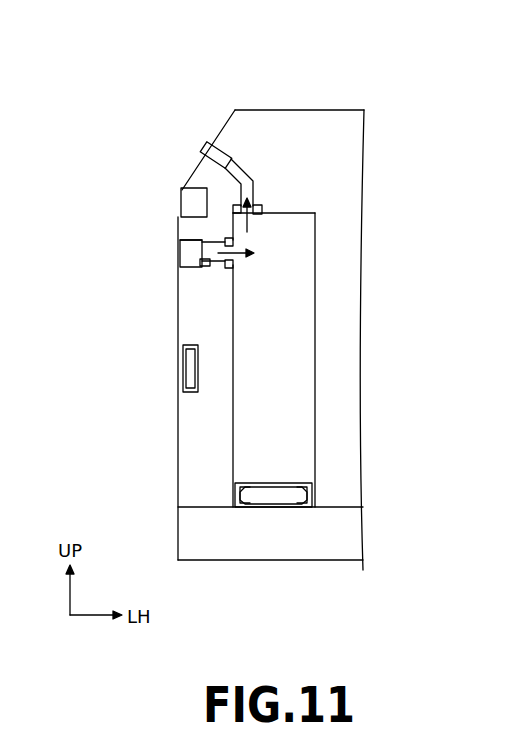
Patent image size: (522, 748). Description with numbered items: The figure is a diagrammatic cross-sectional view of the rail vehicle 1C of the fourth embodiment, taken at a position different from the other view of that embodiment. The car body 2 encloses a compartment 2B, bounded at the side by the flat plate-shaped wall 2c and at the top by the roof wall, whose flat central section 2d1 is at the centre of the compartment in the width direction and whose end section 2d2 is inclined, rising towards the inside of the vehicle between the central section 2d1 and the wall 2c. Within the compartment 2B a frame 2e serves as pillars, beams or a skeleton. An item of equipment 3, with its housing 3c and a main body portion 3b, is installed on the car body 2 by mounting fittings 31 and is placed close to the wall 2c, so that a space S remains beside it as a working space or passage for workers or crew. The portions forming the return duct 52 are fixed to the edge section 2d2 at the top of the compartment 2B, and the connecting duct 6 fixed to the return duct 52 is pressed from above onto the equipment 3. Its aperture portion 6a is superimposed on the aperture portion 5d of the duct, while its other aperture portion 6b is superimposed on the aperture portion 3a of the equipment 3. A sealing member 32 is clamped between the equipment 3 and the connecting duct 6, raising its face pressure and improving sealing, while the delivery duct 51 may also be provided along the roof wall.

The rail vehicle 1C is at (154, 72).
The car body 2 is at (232, 104).
The compartment 2B is at (342, 129).
The central section 2d1 is at (262, 109).
The end section 2d2 is at (227, 118).
The frame 2e is at (185, 190).
The wall 2c is at (178, 437).
The item of equipment 3 is at (319, 433).
The aperture portion 3a is at (232, 265).
The main body portion 3b is at (295, 350).
The housing 3c is at (316, 302).
The return duct 52 is at (199, 155).
The delivery duct 51 is at (174, 261).
The aperture portion 5d is at (200, 168).
The connecting duct 6 is at (205, 266).
The aperture portion 6a is at (212, 146).
The aperture portion 6b is at (256, 206).
The sealing member 32 is at (263, 211).
The mounting fitting 31 is at (236, 508).
The space S is at (337, 493).